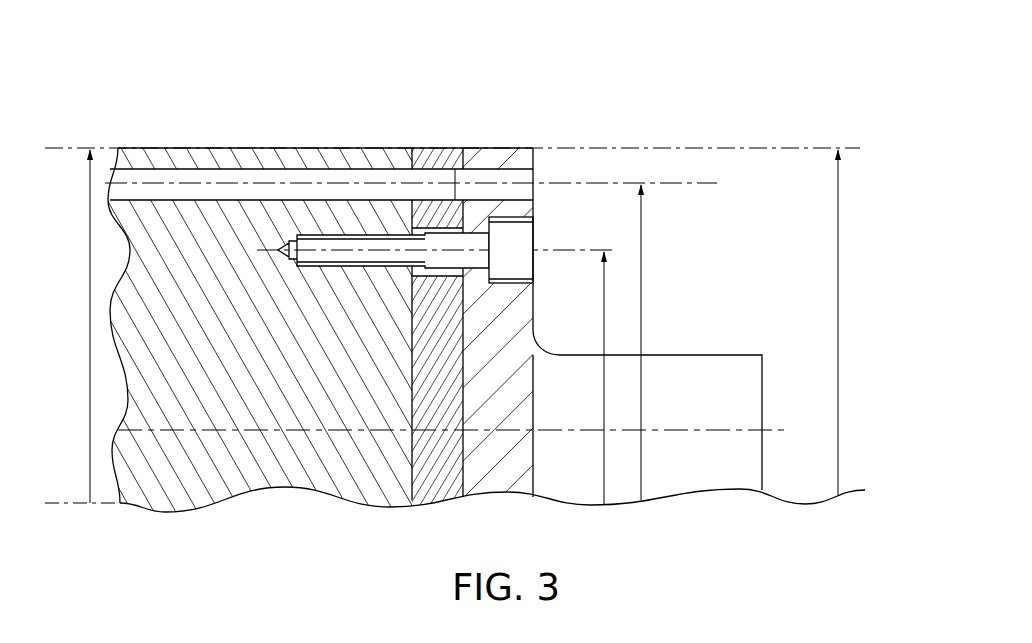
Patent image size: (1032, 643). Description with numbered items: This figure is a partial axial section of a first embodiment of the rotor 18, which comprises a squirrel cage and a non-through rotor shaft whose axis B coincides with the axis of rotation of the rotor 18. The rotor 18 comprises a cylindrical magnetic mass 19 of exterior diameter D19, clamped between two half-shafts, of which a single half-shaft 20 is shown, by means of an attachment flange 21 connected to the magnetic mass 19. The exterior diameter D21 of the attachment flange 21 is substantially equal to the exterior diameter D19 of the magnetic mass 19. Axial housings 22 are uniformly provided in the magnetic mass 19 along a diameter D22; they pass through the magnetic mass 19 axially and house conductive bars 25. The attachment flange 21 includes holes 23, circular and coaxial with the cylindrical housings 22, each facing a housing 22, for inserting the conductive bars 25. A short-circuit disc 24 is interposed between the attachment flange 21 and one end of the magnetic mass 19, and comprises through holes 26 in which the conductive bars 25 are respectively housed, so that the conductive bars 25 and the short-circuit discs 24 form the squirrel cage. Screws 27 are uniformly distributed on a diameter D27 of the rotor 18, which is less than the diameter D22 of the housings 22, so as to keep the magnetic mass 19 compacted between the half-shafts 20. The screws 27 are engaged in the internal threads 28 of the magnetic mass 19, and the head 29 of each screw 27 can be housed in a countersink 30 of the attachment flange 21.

The rotor 18 is at (513, 60).
The cylindrical magnetic mass 19 is at (128, 146).
The half-shaft 20 is at (659, 339).
The attachment flange 21 is at (526, 148).
The axial housings 22 is at (278, 165).
The holes 23 is at (510, 162).
The short-circuit discs 24 is at (426, 146).
The conductive bars 25 is at (193, 183).
The through holes 26 is at (413, 162).
The screws 27 is at (466, 168).
The internal threads 28 is at (302, 234).
The head 29 is at (525, 268).
The countersink 30 is at (515, 217).
The exterior diameter of the magnetic mass D19 is at (90, 300).
The exterior diameter of the attachment flange D21 is at (842, 328).
The diameter of the housings D22 is at (645, 235).
The implantation diameter of the screws D27 is at (604, 498).
The axis B is at (463, 430).